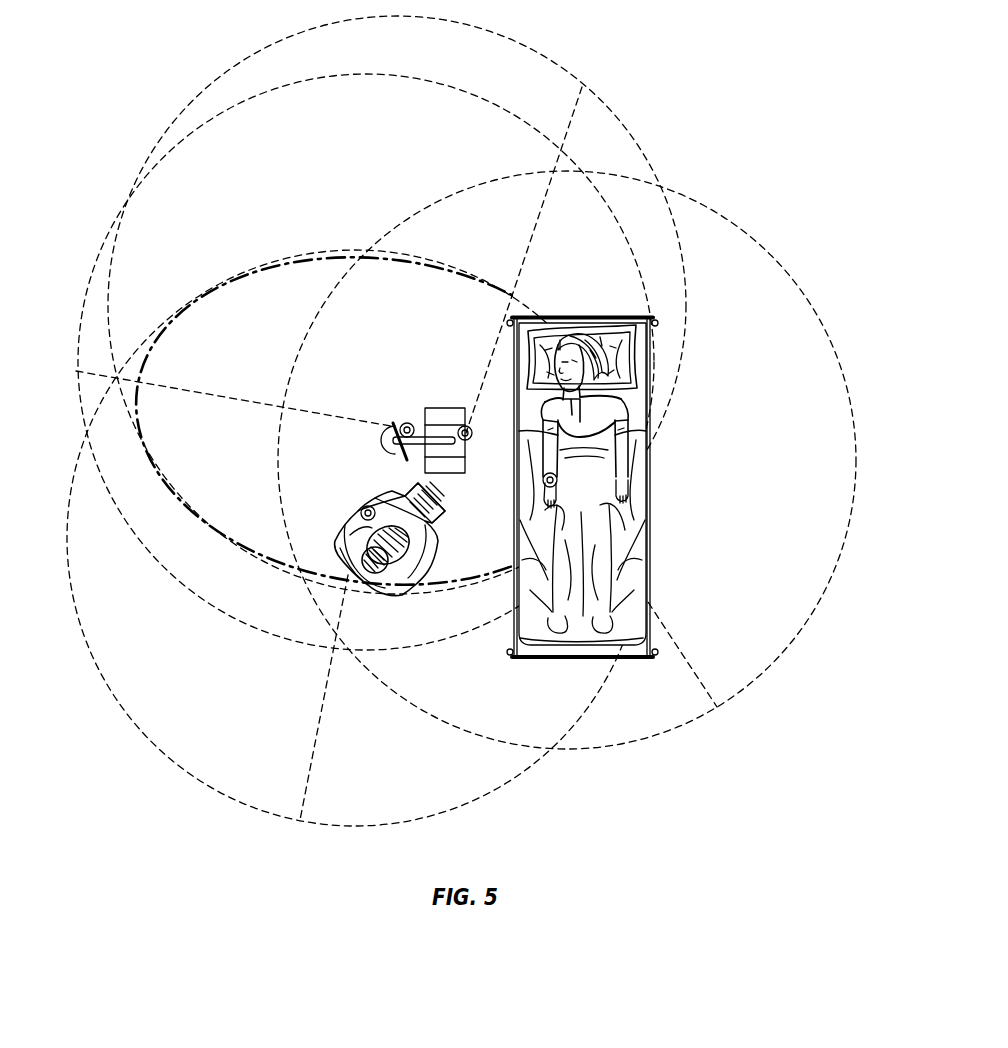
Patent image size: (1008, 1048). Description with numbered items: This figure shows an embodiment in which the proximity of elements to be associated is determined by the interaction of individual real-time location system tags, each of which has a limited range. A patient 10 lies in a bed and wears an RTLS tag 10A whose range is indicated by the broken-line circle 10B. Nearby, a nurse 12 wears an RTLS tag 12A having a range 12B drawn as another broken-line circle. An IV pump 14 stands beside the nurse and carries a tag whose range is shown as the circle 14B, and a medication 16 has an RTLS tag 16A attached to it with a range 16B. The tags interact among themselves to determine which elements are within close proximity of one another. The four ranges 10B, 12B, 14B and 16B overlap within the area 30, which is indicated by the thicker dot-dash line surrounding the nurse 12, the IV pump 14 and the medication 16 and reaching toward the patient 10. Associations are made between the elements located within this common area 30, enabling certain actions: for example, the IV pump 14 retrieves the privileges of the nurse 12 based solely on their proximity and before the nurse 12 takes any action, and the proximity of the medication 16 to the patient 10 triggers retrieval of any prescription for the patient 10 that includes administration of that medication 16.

The patient 10 is at (628, 428).
The RTLS tag 10A is at (545, 483).
The range 10B is at (772, 637).
The nurse 12 is at (432, 550).
The RTLS tag 12A is at (364, 507).
The range 12B is at (203, 782).
The IV pump 14 is at (423, 461).
The range 14B is at (80, 316).
The medication 16 is at (390, 447).
The RTLS tag 16A is at (403, 425).
The range 16B is at (604, 105).
The area 30 is at (168, 340).